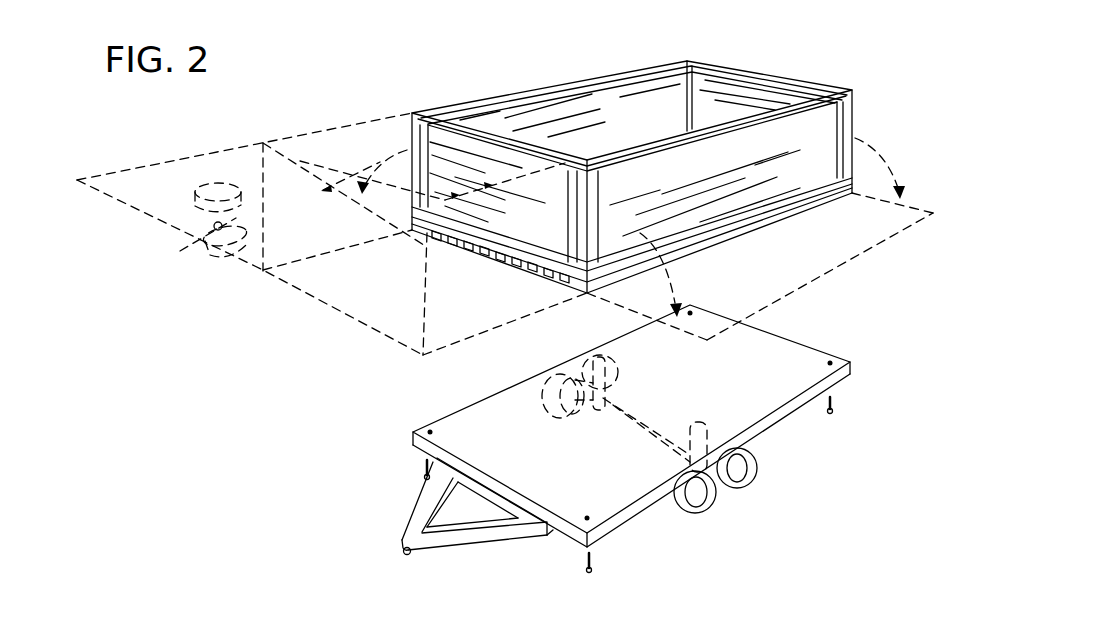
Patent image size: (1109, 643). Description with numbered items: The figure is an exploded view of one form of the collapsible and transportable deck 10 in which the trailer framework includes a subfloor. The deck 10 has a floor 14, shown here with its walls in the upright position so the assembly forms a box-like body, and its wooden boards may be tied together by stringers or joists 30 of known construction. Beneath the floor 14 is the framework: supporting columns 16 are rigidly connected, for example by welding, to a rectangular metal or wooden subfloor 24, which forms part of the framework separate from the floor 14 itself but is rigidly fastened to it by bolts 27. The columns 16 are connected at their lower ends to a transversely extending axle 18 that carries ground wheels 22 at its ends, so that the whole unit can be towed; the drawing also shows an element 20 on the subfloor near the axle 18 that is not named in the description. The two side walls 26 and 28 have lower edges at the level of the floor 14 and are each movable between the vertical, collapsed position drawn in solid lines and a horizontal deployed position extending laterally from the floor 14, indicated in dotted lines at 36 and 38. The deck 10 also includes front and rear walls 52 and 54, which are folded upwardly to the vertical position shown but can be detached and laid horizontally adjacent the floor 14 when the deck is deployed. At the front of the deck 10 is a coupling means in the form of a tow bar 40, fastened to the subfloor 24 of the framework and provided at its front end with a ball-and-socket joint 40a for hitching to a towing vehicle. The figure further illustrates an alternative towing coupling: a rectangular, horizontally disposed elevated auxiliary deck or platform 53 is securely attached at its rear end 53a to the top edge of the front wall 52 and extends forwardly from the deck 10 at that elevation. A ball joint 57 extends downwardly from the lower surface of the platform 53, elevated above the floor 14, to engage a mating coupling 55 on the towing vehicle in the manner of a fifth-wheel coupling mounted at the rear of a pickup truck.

The deck 10 is at (484, 84).
The floor 14 is at (527, 263).
The supporting columns 16 is at (693, 422).
The axle 18 is at (627, 417).
The jack 20 is at (563, 420).
The ground wheels 22 is at (710, 502).
The subfloor 24 is at (803, 355).
The wall 26 is at (743, 157).
The bolts 27 is at (423, 470).
The wall 28 is at (515, 96).
The stringers or joists 30 is at (618, 72).
The horizontal deployed position 36 is at (414, 206).
The horizontal deployed position 38 is at (863, 250).
The tow bar 40 is at (460, 533).
The ball-and-socket joint 40a is at (400, 553).
The front wall 52 is at (457, 123).
The auxiliary deck or platform 53 is at (196, 153).
The rear end 53a is at (288, 152).
The rear wall 54 is at (753, 68).
The mating coupling 55 is at (215, 218).
The ball joint 57 is at (253, 217).